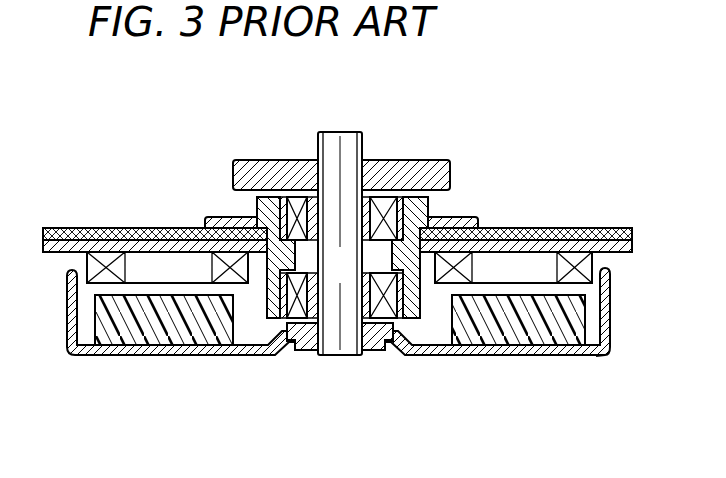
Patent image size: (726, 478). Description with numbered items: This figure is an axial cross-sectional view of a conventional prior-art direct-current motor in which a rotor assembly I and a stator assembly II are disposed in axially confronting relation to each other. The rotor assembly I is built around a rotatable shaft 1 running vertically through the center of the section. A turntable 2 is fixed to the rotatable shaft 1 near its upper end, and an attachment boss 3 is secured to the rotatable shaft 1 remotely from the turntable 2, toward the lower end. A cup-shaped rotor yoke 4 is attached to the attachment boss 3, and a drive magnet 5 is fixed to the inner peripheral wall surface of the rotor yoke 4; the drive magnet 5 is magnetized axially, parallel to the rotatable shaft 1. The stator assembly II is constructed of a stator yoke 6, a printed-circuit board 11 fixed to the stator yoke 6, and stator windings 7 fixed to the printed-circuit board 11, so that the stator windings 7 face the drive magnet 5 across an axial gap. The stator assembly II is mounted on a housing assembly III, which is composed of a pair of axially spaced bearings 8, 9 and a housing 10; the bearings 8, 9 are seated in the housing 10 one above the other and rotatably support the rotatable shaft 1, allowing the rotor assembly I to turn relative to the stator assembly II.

The rotatable shaft 1 is at (347, 131).
The turntable 2 is at (276, 159).
The attachment boss 3 is at (311, 351).
The rotor yoke 4 is at (122, 356).
The drive magnet 5 is at (567, 338).
The stator yoke 6 is at (608, 227).
The stator windings 7 is at (109, 258).
The bearing 8 is at (410, 176).
The bearing 9 is at (275, 319).
The housing 10 is at (467, 216).
The printed-circuit board 11 is at (86, 240).
The rotor assembly I is at (597, 362).
The stator assembly II is at (167, 224).
The housing assembly III is at (218, 210).